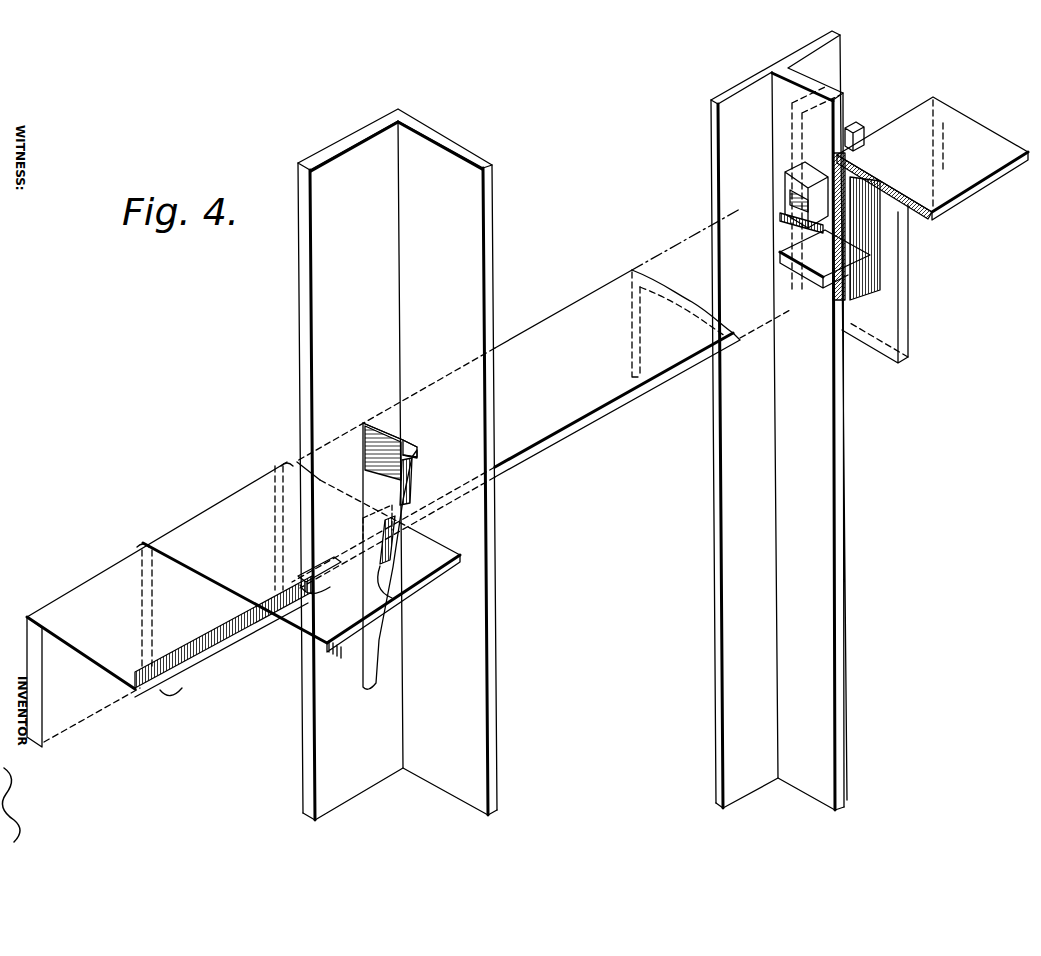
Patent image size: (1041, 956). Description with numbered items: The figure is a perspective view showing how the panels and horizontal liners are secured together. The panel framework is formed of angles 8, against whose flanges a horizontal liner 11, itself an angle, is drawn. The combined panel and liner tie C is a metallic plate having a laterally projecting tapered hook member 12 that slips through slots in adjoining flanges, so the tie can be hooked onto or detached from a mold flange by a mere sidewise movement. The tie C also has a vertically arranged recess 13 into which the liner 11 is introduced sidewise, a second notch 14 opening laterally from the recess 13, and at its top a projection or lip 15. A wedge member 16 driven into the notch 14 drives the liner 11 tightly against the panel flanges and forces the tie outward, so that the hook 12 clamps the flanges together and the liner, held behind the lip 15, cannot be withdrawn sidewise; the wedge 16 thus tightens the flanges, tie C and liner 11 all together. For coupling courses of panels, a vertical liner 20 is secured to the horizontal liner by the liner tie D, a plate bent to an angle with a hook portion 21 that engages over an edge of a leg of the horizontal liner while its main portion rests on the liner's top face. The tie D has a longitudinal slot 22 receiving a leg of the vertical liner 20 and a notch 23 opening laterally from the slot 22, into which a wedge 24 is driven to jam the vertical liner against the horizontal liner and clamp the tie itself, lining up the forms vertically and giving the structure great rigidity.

The angles 8 is at (779, 420).
The liner 11 is at (541, 398).
The hook member 12 is at (782, 218).
The recess 13 is at (860, 177).
The notch 14 is at (910, 227).
The lip 15 is at (856, 140).
The wedge member 16 is at (815, 266).
The vertical liner 20 is at (397, 464).
The hook portion 21 is at (182, 679).
The slot 22 is at (333, 574).
The notch 23 is at (385, 587).
The wedge 24 is at (363, 450).
The combined panel and liner tie C is at (882, 302).
The liner tie D is at (243, 602).